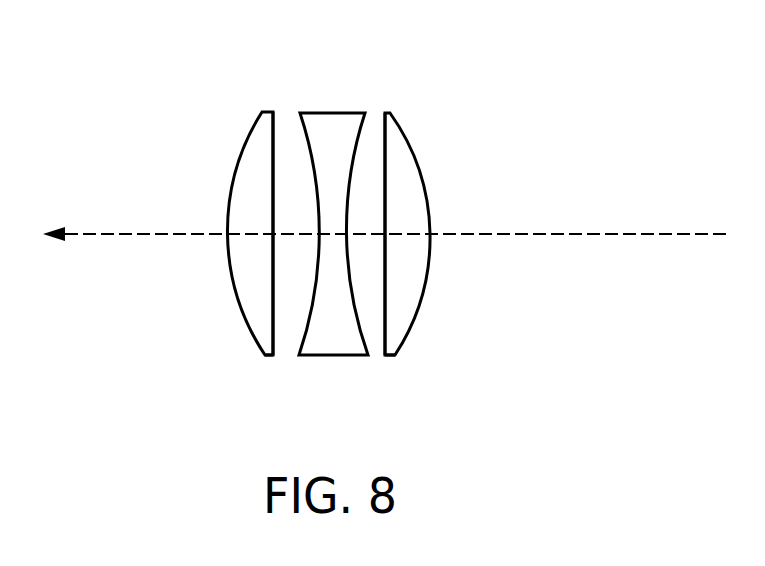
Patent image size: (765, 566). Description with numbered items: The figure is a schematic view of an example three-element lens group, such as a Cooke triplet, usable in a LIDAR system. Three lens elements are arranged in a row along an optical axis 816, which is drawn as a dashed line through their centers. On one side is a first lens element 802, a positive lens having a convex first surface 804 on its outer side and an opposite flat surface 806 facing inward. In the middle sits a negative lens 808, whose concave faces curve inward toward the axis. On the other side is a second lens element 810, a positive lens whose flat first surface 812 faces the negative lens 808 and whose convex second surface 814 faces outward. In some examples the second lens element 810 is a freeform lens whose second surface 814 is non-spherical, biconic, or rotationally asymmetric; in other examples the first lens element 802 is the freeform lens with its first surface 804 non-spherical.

The first lens element 802 is at (386, 352).
The first surface 804 is at (395, 115).
The flat surface 806 is at (382, 138).
The negative lens 808 is at (353, 347).
The second lens element 810 is at (274, 352).
The flat first surface 812 is at (276, 130).
The second surface 814 is at (262, 112).
The optical axis 816 is at (68, 232).